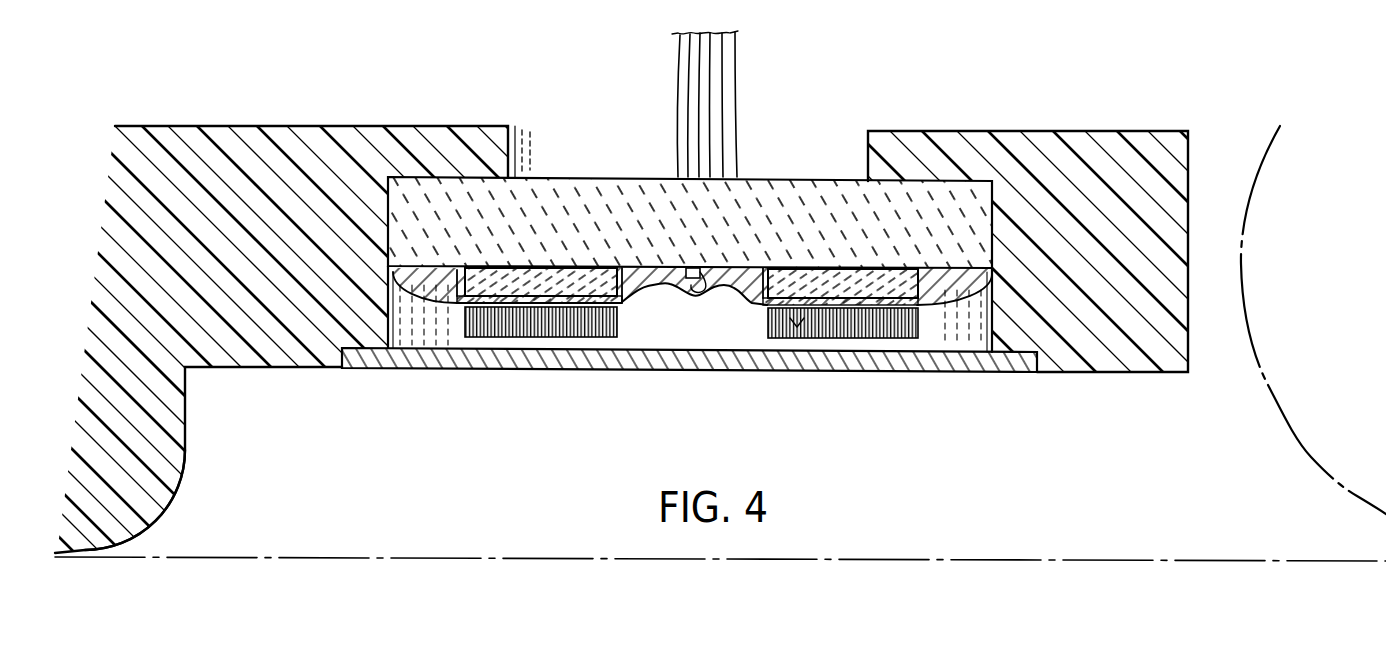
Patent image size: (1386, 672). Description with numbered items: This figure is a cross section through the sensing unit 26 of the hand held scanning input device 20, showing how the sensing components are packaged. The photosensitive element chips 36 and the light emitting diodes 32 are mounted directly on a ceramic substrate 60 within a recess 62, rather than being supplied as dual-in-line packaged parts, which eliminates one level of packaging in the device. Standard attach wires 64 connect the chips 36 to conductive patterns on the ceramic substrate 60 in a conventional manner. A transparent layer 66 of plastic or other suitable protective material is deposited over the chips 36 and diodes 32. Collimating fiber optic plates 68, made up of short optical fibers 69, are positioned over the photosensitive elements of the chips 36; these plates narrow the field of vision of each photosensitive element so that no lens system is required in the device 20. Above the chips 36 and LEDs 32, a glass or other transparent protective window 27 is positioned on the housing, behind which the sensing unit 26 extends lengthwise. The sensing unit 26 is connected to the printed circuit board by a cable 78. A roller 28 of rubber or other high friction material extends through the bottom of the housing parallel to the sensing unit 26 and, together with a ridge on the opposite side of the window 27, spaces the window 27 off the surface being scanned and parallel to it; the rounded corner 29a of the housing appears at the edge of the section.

The hand held scanning input device 20 is at (1125, 372).
The sensing unit 26 is at (683, 388).
The window 27 is at (557, 368).
The roller 28 is at (1311, 457).
The rounded edge 29a is at (171, 500).
The light emitting diodes 32 is at (697, 268).
The photosensitive element chips 36 is at (478, 268).
The ceramic substrate 60 is at (588, 203).
The recess 62 is at (393, 315).
The attach wires 64 is at (457, 303).
The transparent layer 66 is at (460, 337).
The collimating fiber optic plates 68 is at (858, 338).
The short optical fibers 69 is at (797, 327).
The cable 78 is at (728, 83).